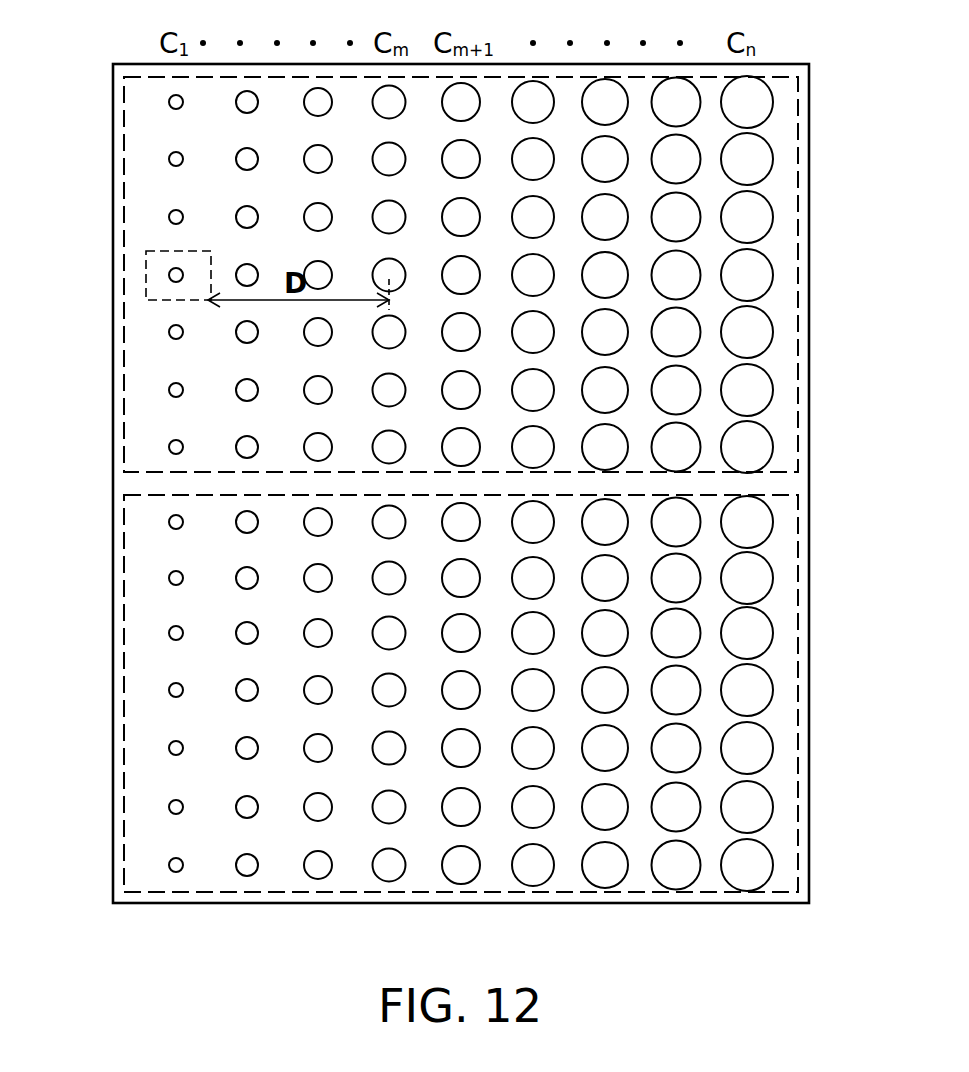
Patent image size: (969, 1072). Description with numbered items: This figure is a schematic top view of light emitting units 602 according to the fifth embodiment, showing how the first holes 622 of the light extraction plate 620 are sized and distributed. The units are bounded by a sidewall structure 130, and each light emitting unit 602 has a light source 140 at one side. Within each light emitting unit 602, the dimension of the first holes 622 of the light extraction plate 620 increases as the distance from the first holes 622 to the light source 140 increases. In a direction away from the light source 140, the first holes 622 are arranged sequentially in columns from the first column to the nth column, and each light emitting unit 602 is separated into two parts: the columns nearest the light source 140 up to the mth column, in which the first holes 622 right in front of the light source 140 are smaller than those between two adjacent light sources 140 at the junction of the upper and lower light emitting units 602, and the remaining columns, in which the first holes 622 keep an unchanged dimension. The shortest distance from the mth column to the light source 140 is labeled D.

The sidewall structure 130 is at (112, 103).
The light source 140 is at (146, 276).
The light emitting unit 602 is at (822, 275).
The light extraction plate 620 is at (788, 100).
The first hole 622 is at (748, 162).